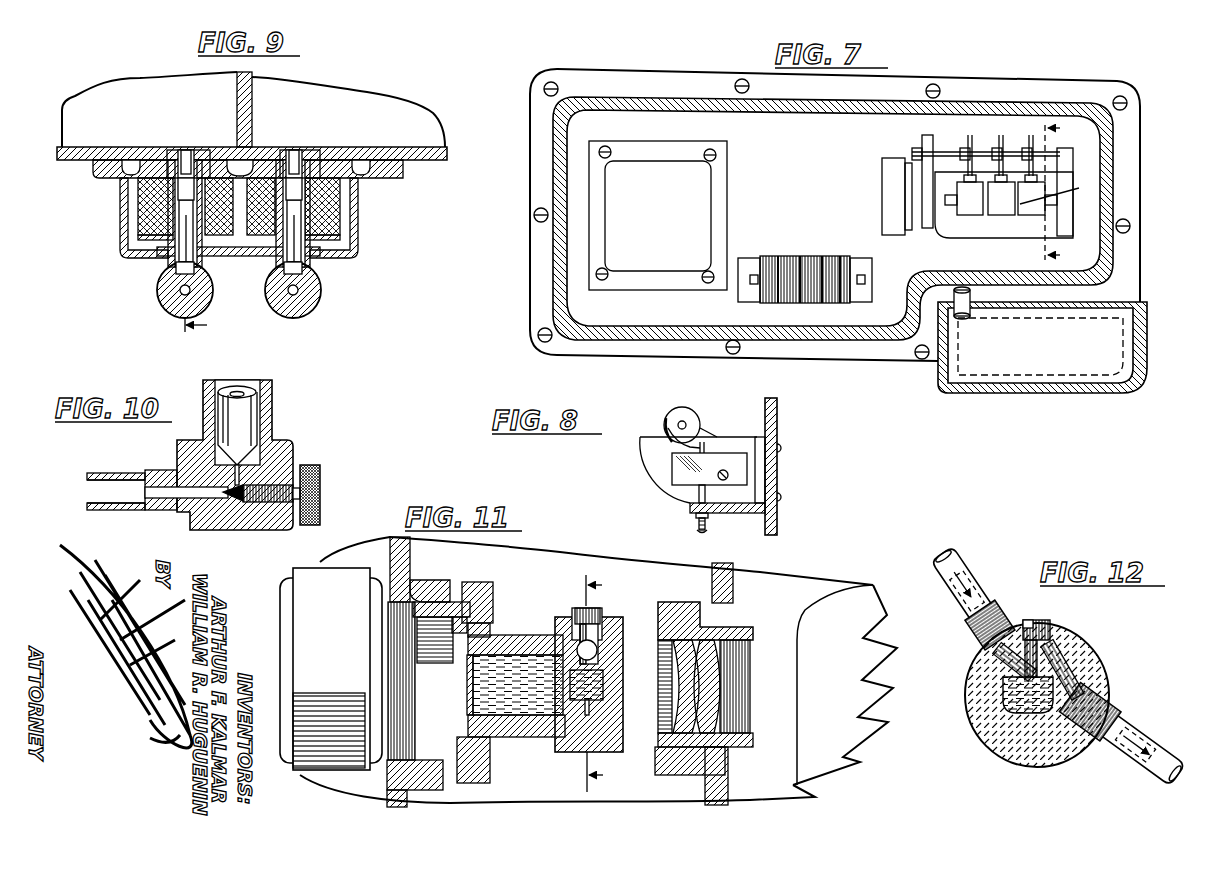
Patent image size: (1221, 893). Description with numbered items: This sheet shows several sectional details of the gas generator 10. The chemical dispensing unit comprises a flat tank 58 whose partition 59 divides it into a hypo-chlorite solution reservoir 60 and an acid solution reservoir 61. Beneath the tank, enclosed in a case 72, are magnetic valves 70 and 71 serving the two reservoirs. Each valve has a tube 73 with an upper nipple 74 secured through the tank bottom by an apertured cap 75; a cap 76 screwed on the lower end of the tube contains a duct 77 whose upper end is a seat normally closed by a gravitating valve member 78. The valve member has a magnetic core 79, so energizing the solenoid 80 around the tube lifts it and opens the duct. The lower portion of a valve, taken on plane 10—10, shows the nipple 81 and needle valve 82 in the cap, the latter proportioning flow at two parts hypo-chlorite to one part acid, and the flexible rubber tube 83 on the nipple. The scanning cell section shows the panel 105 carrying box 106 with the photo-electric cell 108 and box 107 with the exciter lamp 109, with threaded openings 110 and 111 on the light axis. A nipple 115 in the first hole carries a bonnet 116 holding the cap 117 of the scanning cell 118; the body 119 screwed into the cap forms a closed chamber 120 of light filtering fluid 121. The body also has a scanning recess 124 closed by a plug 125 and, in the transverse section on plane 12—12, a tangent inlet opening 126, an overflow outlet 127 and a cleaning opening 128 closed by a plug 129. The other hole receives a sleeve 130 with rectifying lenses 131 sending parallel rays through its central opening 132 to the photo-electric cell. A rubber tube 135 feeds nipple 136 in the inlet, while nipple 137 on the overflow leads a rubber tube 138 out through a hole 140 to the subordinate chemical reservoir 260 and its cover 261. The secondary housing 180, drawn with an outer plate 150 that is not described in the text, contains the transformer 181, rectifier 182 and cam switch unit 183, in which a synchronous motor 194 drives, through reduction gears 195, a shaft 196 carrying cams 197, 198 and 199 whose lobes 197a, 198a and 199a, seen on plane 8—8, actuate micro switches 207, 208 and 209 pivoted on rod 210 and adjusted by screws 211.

In FIG. 7, the section plane 8— 8 is at (1060, 192).
In FIG. 9, the gas generator 10 is at (189, 333).
In FIG. 11, the section plane 12— 12 is at (585, 683).
In FIG. 9, the flat tank 58 is at (325, 88).
In FIG. 9, the partition 59 is at (253, 90).
In FIG. 9, the hypo-chlorite solution reservoir 60 is at (118, 92).
In FIG. 9, the acid solution reservoir 61 is at (365, 100).
In FIG. 9, the magnetic valve 70 is at (124, 212).
In FIG. 9, the magnetic valve 71 is at (356, 212).
In FIG. 9, the case 72 is at (247, 258).
In FIG. 9, the tube 73 is at (167, 246).
In FIG. 10, the tube 73 is at (273, 385).
In FIG. 9, the nipple 74 is at (194, 152).
In FIG. 9, the apertured cap 75 is at (182, 152).
In FIG. 9, the cap 76 is at (160, 289).
In FIG. 10, the cap 76 is at (290, 450).
In FIG. 9, the duct 77 is at (175, 276).
In FIG. 9, the valve member 78 is at (184, 213).
In FIG. 10, the valve member 78 is at (245, 420).
In FIG. 9, the core 79 is at (186, 214).
In FIG. 10, the core 79 is at (236, 388).
In FIG. 9, the solenoid 80 is at (150, 192).
In FIG. 10, the nipple 81 is at (157, 470).
In FIG. 10, the needle valve 82 is at (280, 505).
In FIG. 10, the flexible rubber tube 83 is at (107, 474).
In FIG. 8, the panel 105 is at (778, 470).
In FIG. 11, the panel 105 is at (555, 564).
In FIG. 11, the box 106 is at (390, 788).
In FIG. 11, the box 107 is at (708, 787).
In FIG. 11, the photo-electric cell 108 is at (348, 578).
In FIG. 11, the electric exciter lamp 109 is at (792, 767).
In FIG. 11, the threaded opening 110 is at (388, 607).
In FIG. 11, the threaded opening 111 is at (680, 628).
In FIG. 11, the nipple 115 is at (455, 600).
In FIG. 11, the bonnet 116 is at (490, 601).
In FIG. 11, the cap 117 is at (488, 638).
In FIG. 11, the scanning cell 118 is at (548, 629).
In FIG. 12, the scanning cell 118 is at (970, 730).
In FIG. 11, the body 119 is at (537, 735).
In FIG. 12, the body 119 is at (995, 740).
In FIG. 11, the closed chamber 120 is at (522, 712).
In FIG. 11, the light filtering fluid 121 is at (483, 681).
In FIG. 11, the scanning recess 124 is at (587, 712).
In FIG. 12, the scanning recess 124 is at (1028, 712).
In FIG. 11, the plug 125 is at (603, 672).
In FIG. 12, the tangent inlet opening 126 is at (985, 672).
In FIG. 11, the overflow outlet 127 is at (597, 650).
In FIG. 12, the overflow outlet 127 is at (1070, 675).
In FIG. 11, the cleaning opening 128 is at (598, 634).
In FIG. 12, the cleaning opening 128 is at (1043, 650).
In FIG. 11, the plug 129 is at (592, 610).
In FIG. 12, the plug 129 is at (1037, 620).
In FIG. 11, the sleeve 130 is at (740, 630).
In FIG. 11, the rectifying lenses 131 is at (690, 700).
In FIG. 11, the central opening 132 is at (675, 692).
In FIG. 12, the rubber tube 135 is at (973, 568).
In FIG. 12, the nipple 136 is at (983, 642).
In FIG. 12, the nipple 137 is at (1110, 702).
In FIG. 7, the rubber tube 138 is at (970, 318).
In FIG. 12, the rubber tube 138 is at (1147, 770).
In FIG. 7, the hole 140 is at (971, 300).
In FIG. 7, the cover plate 150 is at (1037, 106).
In FIG. 7, the secondary housing 180 is at (657, 98).
In FIG. 7, the transformer 181 is at (659, 150).
In FIG. 7, the rectifier 182 is at (800, 262).
In FIG. 7, the motor driven cam switch unit 183 is at (966, 192).
In FIG. 7, the synchronous electric motor 194 is at (882, 191).
In FIG. 7, the reduction gears 195 is at (908, 231).
In FIG. 7, the shaft 196 is at (950, 150).
In FIG. 8, the shaft 196 is at (687, 423).
In FIG. 7, the cam 197 is at (969, 147).
In FIG. 7, the cam 198 is at (1001, 147).
In FIG. 7, the cam 199 is at (1031, 147).
In FIG. 8, the cam 199 is at (683, 409).
In FIG. 8, the lobe 199a is at (663, 414).
In FIG. 8, the lobe 198a is at (665, 430).
In FIG. 8, the lobe 197a is at (660, 442).
In FIG. 7, the micro switch 207 is at (974, 212).
In FIG. 7, the micro switch 208 is at (1007, 212).
In FIG. 7, the micro switch 209 is at (1035, 214).
In FIG. 8, the micro switch 209 is at (678, 475).
In FIG. 7, the rod 210 is at (1060, 189).
In FIG. 8, the rod 210 is at (725, 470).
In FIG. 8, the screws 211 is at (697, 522).
In FIG. 7, the subordinate chemical reservoir 260 is at (1061, 339).
In FIG. 7, the cover 261 is at (1092, 310).